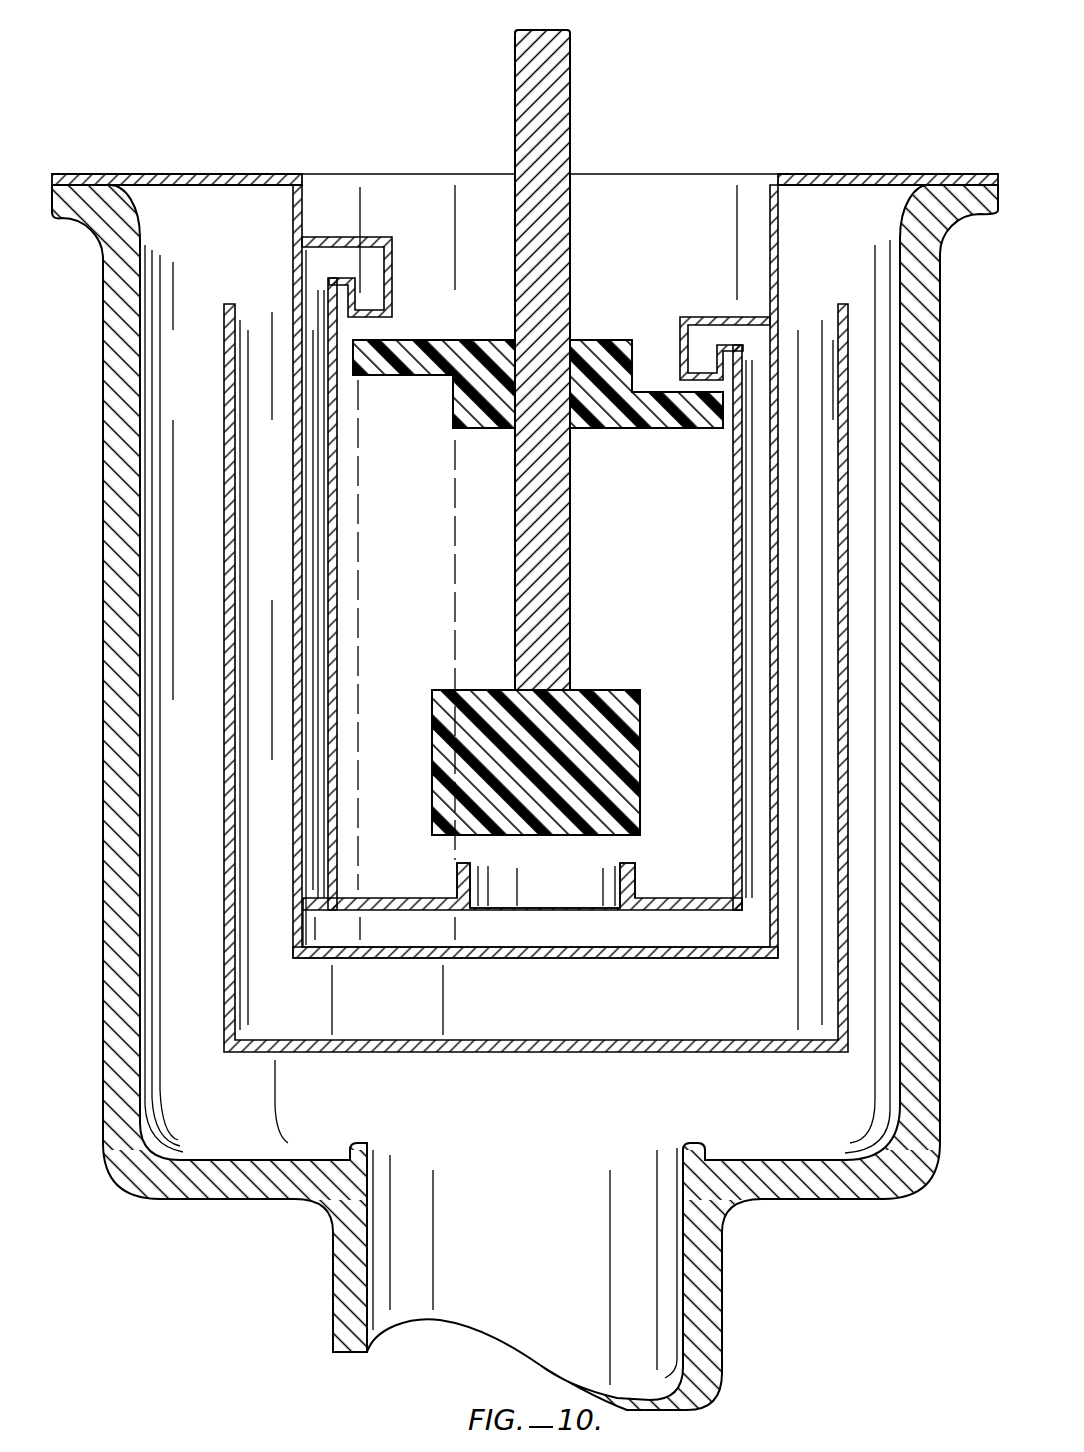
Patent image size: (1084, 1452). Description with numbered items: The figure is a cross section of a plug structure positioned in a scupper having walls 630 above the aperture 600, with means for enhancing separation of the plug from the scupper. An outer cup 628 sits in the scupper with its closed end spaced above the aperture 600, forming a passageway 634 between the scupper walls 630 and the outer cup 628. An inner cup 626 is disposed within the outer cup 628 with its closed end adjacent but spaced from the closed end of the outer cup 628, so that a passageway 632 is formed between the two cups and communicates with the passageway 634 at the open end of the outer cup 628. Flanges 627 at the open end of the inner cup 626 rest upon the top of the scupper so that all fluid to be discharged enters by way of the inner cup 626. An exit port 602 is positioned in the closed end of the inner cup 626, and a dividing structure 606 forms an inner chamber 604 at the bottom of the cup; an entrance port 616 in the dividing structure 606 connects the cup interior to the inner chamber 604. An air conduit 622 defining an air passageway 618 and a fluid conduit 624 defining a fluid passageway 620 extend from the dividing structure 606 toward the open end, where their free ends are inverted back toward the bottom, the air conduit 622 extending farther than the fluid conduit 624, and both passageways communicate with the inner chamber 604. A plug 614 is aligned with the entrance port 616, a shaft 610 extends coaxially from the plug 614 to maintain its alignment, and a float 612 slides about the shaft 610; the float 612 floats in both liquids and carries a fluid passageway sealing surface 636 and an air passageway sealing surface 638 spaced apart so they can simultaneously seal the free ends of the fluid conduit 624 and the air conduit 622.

The aperture 600 is at (531, 1167).
The exit port 602 is at (577, 968).
The inner chamber 604 is at (427, 941).
The dividing structure 606 is at (366, 898).
The shaft 610 is at (570, 88).
The float 612 is at (598, 430).
The plug 614 is at (598, 690).
The entrance port 616 is at (582, 882).
The air passageway 618 is at (314, 484).
The fluid passageway 620 is at (752, 535).
The air conduit 622 is at (337, 558).
The fluid conduit 624 is at (738, 595).
The inner cup 626 is at (292, 246).
The flanges 627 is at (190, 174).
The outer cup 628 is at (225, 420).
The scupper walls 630 is at (115, 556).
The passageway 632 is at (758, 1021).
The passageway 634 is at (817, 1119).
The fluid passageway sealing surface 636 is at (650, 392).
The air passageway sealing surface 638 is at (414, 340).